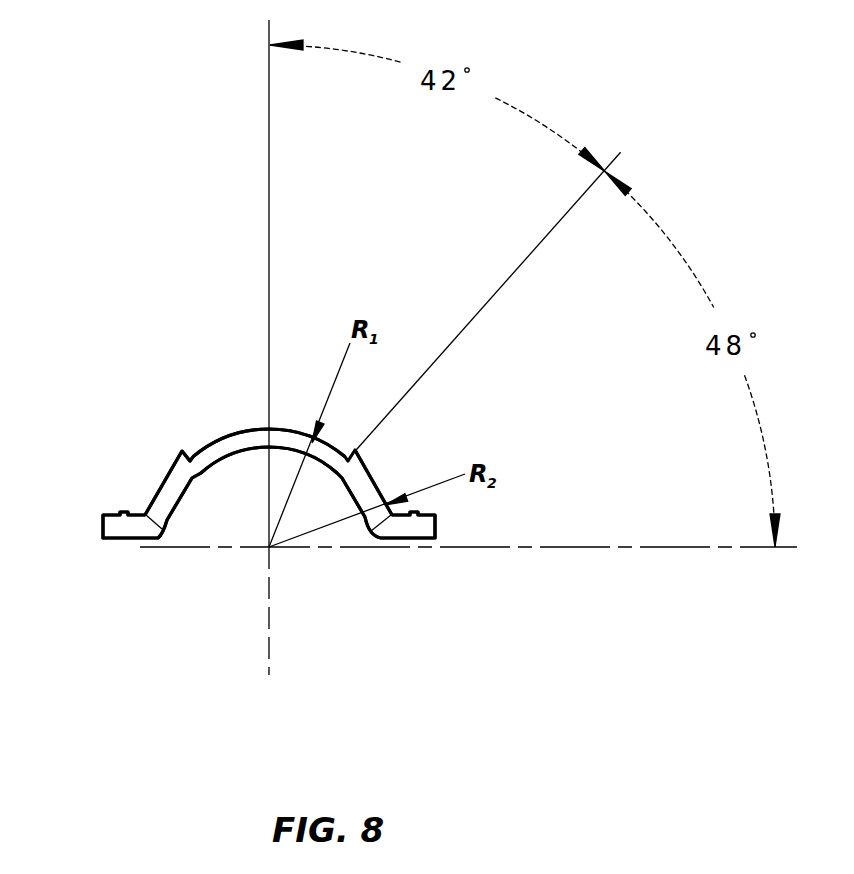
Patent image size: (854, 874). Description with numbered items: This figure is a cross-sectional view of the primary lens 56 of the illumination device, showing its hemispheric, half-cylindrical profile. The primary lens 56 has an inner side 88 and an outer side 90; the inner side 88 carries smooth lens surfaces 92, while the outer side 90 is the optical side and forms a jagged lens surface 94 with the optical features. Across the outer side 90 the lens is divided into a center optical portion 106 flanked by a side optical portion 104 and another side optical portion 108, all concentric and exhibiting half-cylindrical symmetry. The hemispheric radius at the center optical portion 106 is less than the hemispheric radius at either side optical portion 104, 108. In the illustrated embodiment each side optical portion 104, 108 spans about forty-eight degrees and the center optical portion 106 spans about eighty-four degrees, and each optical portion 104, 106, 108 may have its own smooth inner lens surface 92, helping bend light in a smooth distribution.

The primary lens 56 is at (381, 524).
The inner side 88 is at (170, 519).
The outer side 90 is at (146, 501).
The smooth lens surface 92 is at (227, 458).
The jagged lens surface 94 is at (183, 455).
The side optical portion 104 is at (362, 477).
The center optical portion 106 is at (248, 441).
The side optical portion 108 is at (163, 481).